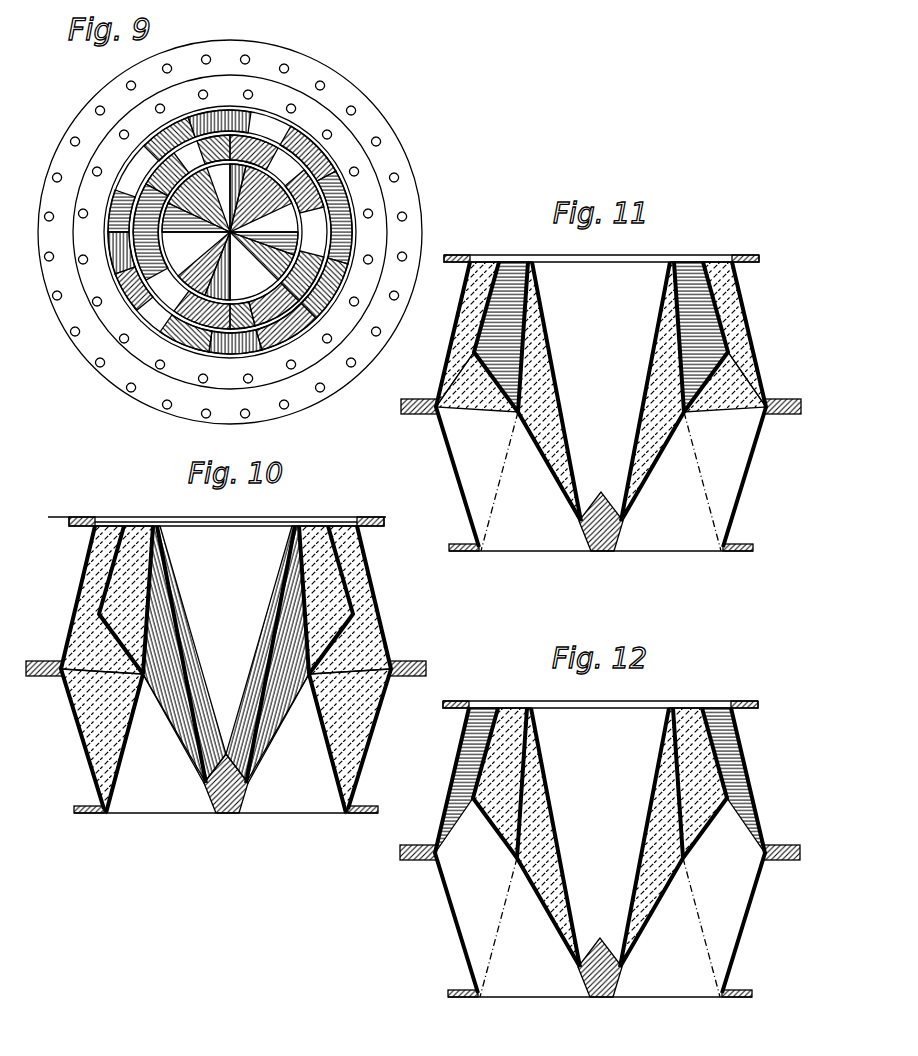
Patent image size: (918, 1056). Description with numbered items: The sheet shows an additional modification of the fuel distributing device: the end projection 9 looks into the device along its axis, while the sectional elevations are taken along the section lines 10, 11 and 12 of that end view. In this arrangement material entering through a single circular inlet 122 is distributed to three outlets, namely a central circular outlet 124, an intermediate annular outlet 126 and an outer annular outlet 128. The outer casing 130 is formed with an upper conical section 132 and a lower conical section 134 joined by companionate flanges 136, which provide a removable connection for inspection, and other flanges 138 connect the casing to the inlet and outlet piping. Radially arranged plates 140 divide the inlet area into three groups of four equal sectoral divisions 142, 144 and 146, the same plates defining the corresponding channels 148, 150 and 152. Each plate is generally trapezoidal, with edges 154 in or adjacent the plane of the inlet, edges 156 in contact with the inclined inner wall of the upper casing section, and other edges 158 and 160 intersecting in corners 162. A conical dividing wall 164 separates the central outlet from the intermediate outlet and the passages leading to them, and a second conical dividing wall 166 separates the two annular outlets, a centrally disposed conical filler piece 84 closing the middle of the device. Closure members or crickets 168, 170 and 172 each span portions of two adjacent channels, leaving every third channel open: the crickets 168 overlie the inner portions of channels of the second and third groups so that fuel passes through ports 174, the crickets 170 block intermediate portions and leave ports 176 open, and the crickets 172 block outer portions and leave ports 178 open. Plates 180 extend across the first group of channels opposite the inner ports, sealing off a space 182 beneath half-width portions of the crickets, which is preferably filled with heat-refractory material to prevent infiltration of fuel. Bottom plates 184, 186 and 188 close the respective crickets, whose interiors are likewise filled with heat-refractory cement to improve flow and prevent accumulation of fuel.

In FIG. 10, the end projection 9 is at (227, 482).
In FIG. 9, the section line 10— 10 is at (100, 275).
In FIG. 9, the section line 11— 11 is at (130, 337).
In FIG. 9, the section line 12— 12 is at (100, 193).
In FIG. 10, the conical filler piece 84 is at (217, 807).
In FIG. 11, the conical filler piece 84 is at (597, 540).
In FIG. 12, the conical filler piece 84 is at (588, 991).
In FIG. 10, the circular inlet 122 is at (226, 835).
In FIG. 11, the circular inlet 122 is at (601, 569).
In FIG. 12, the circular inlet 122 is at (600, 1014).
In FIG. 10, the central circular outlet 124 is at (217, 501).
In FIG. 11, the central circular outlet 124 is at (601, 247).
In FIG. 12, the central circular outlet 124 is at (600, 694).
In FIG. 10, the intermediate annular outlet 126 is at (337, 490).
In FIG. 11, the intermediate annular outlet 126 is at (723, 236).
In FIG. 12, the intermediate annular outlet 126 is at (708, 683).
In FIG. 10, the outer annular outlet 128 is at (366, 498).
In FIG. 11, the outer annular outlet 128 is at (766, 228).
In FIG. 12, the outer annular outlet 128 is at (751, 683).
In FIG. 10, the outer casing 130 is at (409, 641).
In FIG. 11, the outer casing 130 is at (780, 384).
In FIG. 12, the outer casing 130 is at (774, 820).
In FIG. 10, the upper conical casing section 132 is at (244, 667).
In FIG. 11, the upper conical casing section 132 is at (619, 404).
In FIG. 12, the upper conical casing section 132 is at (609, 850).
In FIG. 10, the lower conical casing section 134 is at (391, 601).
In FIG. 11, the lower conical casing section 134 is at (764, 328).
In FIG. 12, the lower conical casing section 134 is at (768, 762).
In FIG. 10, the companionate flanges 136 is at (240, 672).
In FIG. 11, the companionate flanges 136 is at (581, 412).
In FIG. 12, the companionate flanges 136 is at (588, 869).
In FIG. 10, the flanges 138 is at (257, 667).
In FIG. 11, the flanges 138 is at (629, 393).
In FIG. 12, the flanges 138 is at (605, 846).
In FIG. 10, the radially arranged plates 140 is at (317, 840).
In FIG. 11, the radially arranged plates 140 is at (699, 572).
In FIG. 12, the radially arranged plates 140 is at (671, 1016).
In FIG. 9, the sectoral divisions 142 is at (363, 193).
In FIG. 9, the sectoral divisions 144 is at (350, 160).
In FIG. 9, the sectoral divisions 146 is at (258, 120).
In FIG. 10, the channels 148 is at (231, 796).
In FIG. 11, the channels 150 is at (599, 535).
In FIG. 12, the channels 152 is at (594, 951).
In FIG. 10, the plate edges 154 is at (264, 839).
In FIG. 11, the plate edges 154 is at (642, 572).
In FIG. 12, the plate edges 154 is at (613, 1016).
In FIG. 10, the plate edges 156 is at (401, 775).
In FIG. 11, the plate edges 156 is at (768, 510).
In FIG. 12, the plate edges 156 is at (761, 940).
In FIG. 10, the plate edges 158 is at (273, 774).
In FIG. 11, the plate edges 158 is at (688, 501).
In FIG. 12, the plate edges 158 is at (676, 917).
In FIG. 10, the plate edges 160 is at (434, 647).
In FIG. 11, the plate edges 160 is at (747, 422).
In FIG. 12, the plate edges 160 is at (721, 857).
In FIG. 10, the corners 162 is at (405, 622).
In FIG. 11, the corners 162 is at (770, 360).
In FIG. 12, the corners 162 is at (770, 796).
In FIG. 10, the conical dividing wall 164 is at (226, 600).
In FIG. 11, the conical dividing wall 164 is at (601, 337).
In FIG. 12, the conical dividing wall 164 is at (600, 837).
In FIG. 10, the second conical dividing wall 166 is at (281, 654).
In FIG. 11, the second conical dividing wall 166 is at (657, 391).
In FIG. 12, the second conical dividing wall 166 is at (653, 837).
In FIG. 9, the crickets 168 is at (290, 130).
In FIG. 10, the crickets 168 is at (226, 654).
In FIG. 11, the crickets 170 is at (601, 315).
In FIG. 9, the crickets 172 is at (215, 112).
In FIG. 12, the crickets 172 is at (600, 755).
In FIG. 9, the ports 174 is at (222, 236).
In FIG. 10, the ports 174 is at (220, 728).
In FIG. 9, the ports 176 is at (262, 188).
In FIG. 11, the ports 176 is at (601, 413).
In FIG. 9, the ports 178 is at (132, 223).
In FIG. 12, the ports 178 is at (598, 783).
In FIG. 10, the plates 180 is at (226, 743).
In FIG. 11, the plates 180 is at (601, 481).
In FIG. 12, the plates 180 is at (600, 927).
In FIG. 10, the space 182 is at (230, 669).
In FIG. 11, the bottom plates 184 is at (602, 391).
In FIG. 12, the bottom plates 184 is at (600, 921).
In FIG. 12, the bottom plates 186 is at (601, 870).
In FIG. 11, the bottom plates 188 is at (601, 353).